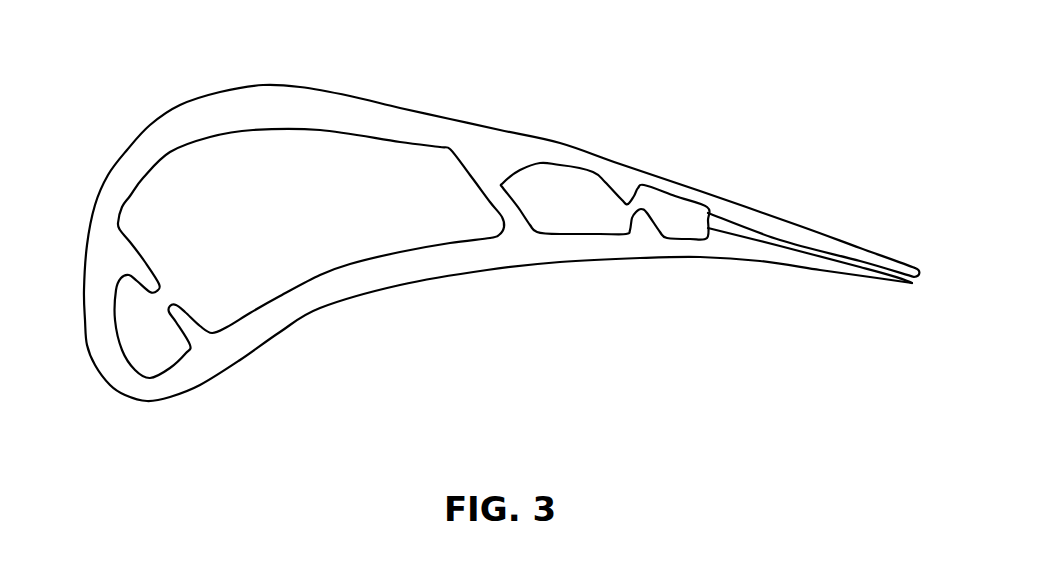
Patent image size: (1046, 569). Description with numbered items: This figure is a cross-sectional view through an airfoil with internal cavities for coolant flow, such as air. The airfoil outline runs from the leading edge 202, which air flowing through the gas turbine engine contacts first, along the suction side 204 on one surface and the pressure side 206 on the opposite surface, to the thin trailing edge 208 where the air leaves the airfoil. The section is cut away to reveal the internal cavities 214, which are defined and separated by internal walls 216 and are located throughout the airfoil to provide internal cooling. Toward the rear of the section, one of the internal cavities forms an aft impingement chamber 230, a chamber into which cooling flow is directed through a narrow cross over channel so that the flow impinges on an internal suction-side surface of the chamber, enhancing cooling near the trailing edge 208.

The leading edge 202 is at (502, 206).
The suction side 204 is at (263, 84).
The pressure side 206 is at (522, 265).
The trailing edge 208 is at (917, 283).
The internal cavities 214 is at (435, 173).
The internal walls 216 is at (493, 190).
The aft impingement chamber 230 is at (682, 208).